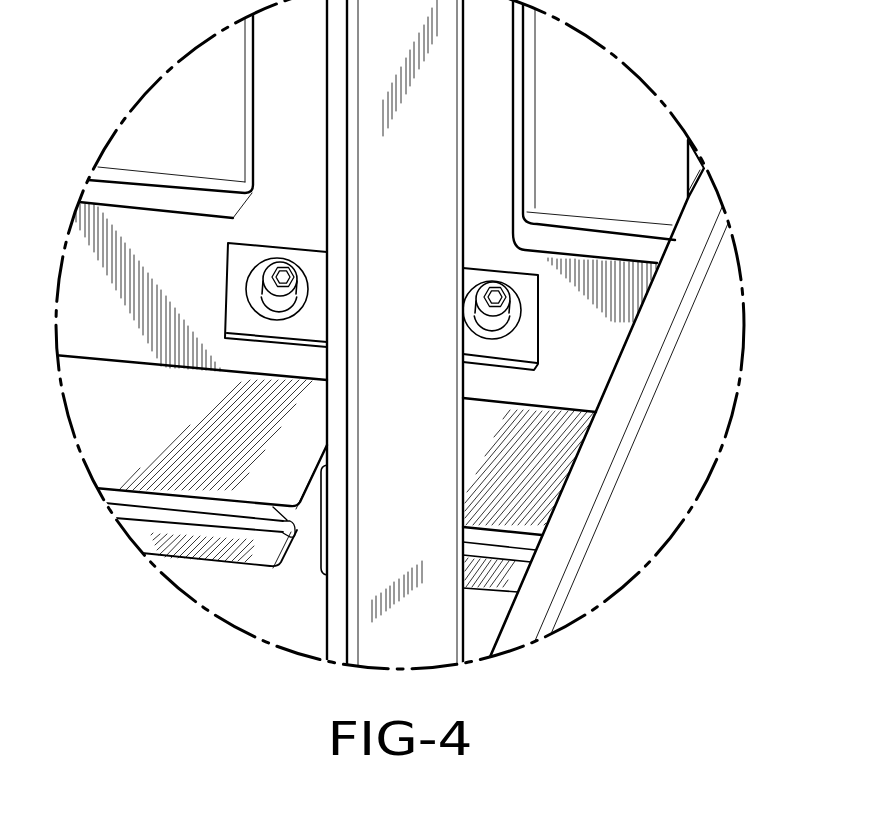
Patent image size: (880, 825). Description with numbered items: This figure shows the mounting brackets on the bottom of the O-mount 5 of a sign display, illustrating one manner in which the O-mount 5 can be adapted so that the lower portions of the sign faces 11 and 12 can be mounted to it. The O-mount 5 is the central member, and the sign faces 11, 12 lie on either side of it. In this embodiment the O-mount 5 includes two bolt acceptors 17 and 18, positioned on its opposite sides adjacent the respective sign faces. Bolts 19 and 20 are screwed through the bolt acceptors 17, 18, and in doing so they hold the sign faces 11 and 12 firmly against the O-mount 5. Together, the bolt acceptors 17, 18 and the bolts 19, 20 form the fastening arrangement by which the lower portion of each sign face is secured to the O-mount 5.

The O-mount 5 is at (398, 370).
The sign face 11 is at (127, 447).
The sign face 12 is at (538, 465).
The bolt acceptor 17 is at (242, 268).
The bolt acceptor 18 is at (531, 328).
The bolt 19 is at (281, 272).
The bolt 20 is at (489, 292).